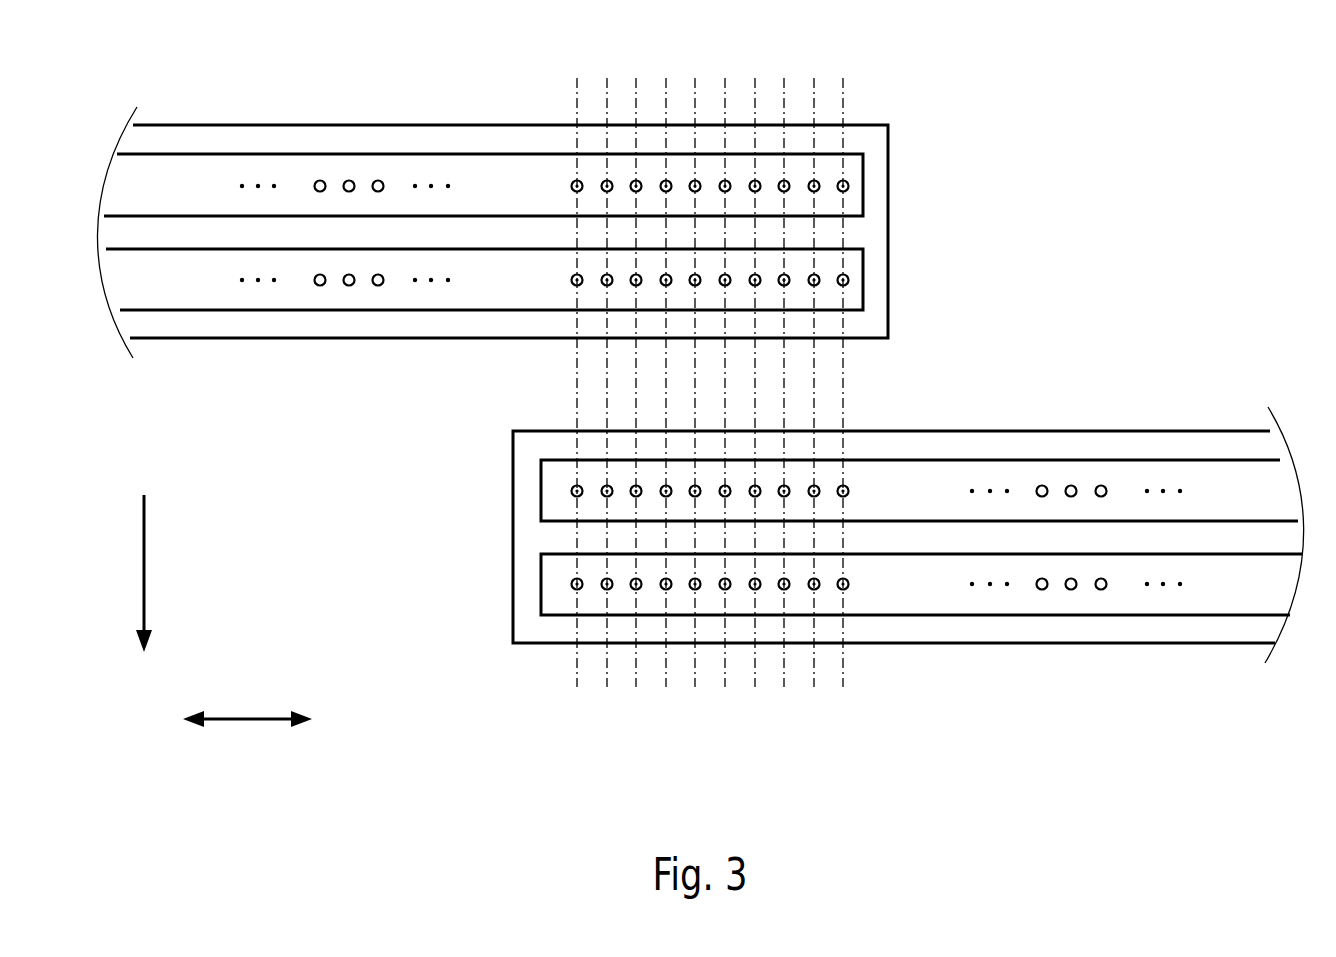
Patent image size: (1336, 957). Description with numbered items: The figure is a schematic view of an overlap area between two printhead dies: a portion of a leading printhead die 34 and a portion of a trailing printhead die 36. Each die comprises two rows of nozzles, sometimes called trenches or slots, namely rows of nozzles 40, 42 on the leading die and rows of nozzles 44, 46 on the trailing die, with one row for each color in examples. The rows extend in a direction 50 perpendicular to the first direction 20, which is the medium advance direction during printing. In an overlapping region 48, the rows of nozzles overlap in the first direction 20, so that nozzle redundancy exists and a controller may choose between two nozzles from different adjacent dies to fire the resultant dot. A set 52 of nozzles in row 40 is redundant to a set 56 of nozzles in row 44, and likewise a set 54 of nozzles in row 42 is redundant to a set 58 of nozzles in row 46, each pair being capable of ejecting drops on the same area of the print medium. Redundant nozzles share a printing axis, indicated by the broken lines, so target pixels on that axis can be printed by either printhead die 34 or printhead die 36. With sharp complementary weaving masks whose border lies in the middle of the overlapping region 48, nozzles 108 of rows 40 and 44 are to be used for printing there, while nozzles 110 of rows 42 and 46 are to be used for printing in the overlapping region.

The first direction 20 is at (145, 568).
The leading printhead die 34 is at (880, 126).
The trailing printhead die 36 is at (528, 645).
The row of nozzles 40 is at (540, 185).
The row of nozzles 42 is at (541, 279).
The row of nozzles 44 is at (863, 490).
The row of nozzles 46 is at (865, 584).
The overlapping region 48 is at (715, 423).
The direction 50 is at (247, 722).
The set of nozzles 52 is at (560, 165).
The set of nozzles 54 is at (560, 259).
The set of nozzles 56 is at (867, 469).
The set of nozzles 58 is at (867, 562).
The nozzles 108 is at (717, 72).
The nozzles 110 is at (568, 703).